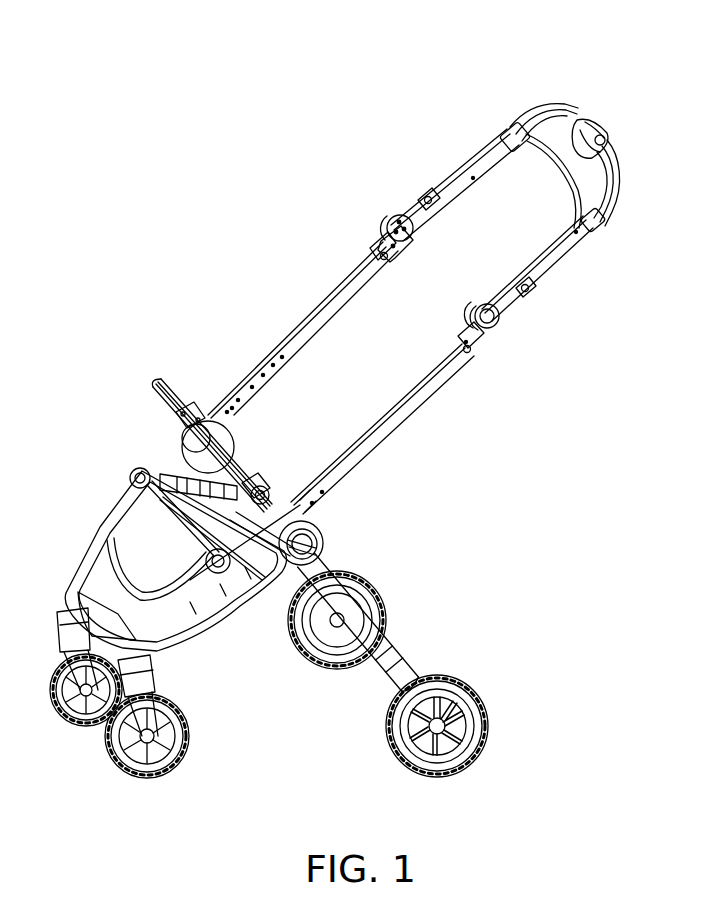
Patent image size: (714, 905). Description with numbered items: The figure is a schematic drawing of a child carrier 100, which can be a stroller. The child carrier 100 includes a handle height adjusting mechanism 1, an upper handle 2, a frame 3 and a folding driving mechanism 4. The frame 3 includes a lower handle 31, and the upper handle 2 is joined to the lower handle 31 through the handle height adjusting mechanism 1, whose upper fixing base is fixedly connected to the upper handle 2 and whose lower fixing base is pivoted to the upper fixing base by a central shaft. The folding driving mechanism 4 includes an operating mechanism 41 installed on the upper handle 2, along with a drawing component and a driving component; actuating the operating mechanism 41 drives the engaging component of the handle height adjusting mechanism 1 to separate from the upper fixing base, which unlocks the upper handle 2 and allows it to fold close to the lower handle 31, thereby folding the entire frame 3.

The child carrier 100 is at (172, 51).
The handle height adjusting mechanism 1 is at (376, 202).
The upper handle 2 is at (470, 172).
The frame 3 is at (234, 622).
The lower handle 31 is at (322, 297).
The folding driving mechanism 4 is at (596, 103).
The operating mechanism 41 is at (608, 126).